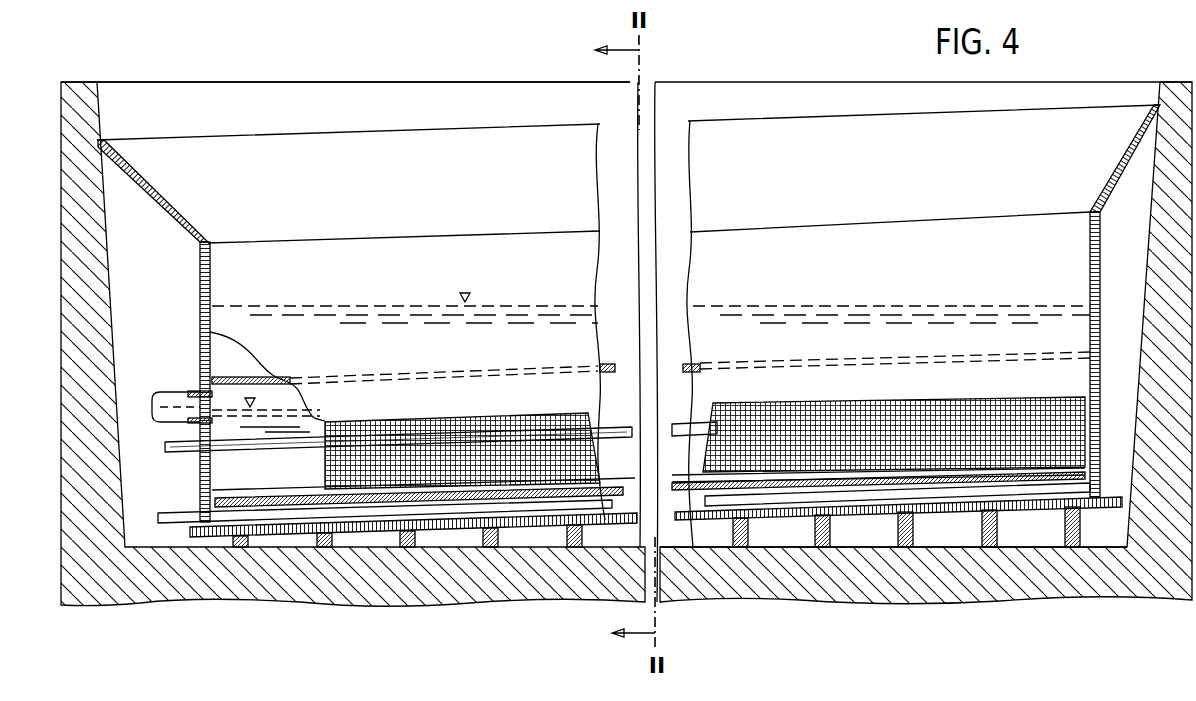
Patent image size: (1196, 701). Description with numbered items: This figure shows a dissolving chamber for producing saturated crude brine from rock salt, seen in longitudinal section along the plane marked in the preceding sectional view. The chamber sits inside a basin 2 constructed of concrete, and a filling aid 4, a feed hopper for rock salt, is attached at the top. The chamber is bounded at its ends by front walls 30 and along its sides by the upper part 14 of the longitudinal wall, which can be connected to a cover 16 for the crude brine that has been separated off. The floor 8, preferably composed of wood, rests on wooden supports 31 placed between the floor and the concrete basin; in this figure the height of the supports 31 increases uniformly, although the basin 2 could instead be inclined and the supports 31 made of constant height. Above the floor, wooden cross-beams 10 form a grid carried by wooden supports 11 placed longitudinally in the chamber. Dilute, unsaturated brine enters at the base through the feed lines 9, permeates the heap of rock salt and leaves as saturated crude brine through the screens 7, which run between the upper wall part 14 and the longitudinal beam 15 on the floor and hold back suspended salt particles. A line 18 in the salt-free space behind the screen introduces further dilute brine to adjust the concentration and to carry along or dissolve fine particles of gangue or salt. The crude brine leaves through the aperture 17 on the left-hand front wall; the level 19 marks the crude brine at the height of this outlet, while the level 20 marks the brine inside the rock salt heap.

The basin 2 is at (323, 605).
The filling aid 4 is at (430, 136).
The screens 7 is at (1085, 437).
The floor 8 is at (278, 547).
The feed lines for dilute brine 9 is at (186, 513).
The cross-beams 10 is at (1055, 478).
The wooden supports for the grid 11 is at (692, 525).
The upper part of the longitudinal wall 14 is at (590, 268).
The longitudinal beam 15 is at (258, 490).
The cover 16 is at (607, 363).
The aperture for removing saturated crude brine 17 is at (178, 392).
The line for the introduction of dilute brine 18 is at (172, 453).
The level of the crude brine 19 is at (282, 400).
The level of the brine in the interior of the rock salt heap 20 is at (800, 305).
The front walls of the chamber 30 is at (200, 277).
The wooden supports for the floor 31 is at (571, 547).